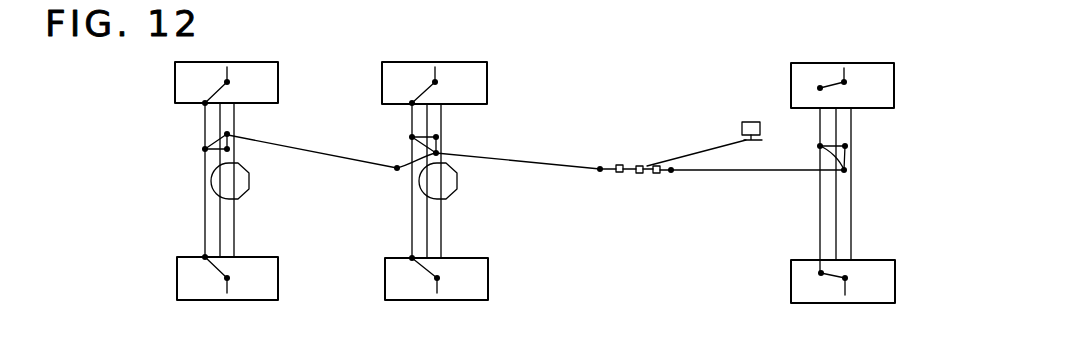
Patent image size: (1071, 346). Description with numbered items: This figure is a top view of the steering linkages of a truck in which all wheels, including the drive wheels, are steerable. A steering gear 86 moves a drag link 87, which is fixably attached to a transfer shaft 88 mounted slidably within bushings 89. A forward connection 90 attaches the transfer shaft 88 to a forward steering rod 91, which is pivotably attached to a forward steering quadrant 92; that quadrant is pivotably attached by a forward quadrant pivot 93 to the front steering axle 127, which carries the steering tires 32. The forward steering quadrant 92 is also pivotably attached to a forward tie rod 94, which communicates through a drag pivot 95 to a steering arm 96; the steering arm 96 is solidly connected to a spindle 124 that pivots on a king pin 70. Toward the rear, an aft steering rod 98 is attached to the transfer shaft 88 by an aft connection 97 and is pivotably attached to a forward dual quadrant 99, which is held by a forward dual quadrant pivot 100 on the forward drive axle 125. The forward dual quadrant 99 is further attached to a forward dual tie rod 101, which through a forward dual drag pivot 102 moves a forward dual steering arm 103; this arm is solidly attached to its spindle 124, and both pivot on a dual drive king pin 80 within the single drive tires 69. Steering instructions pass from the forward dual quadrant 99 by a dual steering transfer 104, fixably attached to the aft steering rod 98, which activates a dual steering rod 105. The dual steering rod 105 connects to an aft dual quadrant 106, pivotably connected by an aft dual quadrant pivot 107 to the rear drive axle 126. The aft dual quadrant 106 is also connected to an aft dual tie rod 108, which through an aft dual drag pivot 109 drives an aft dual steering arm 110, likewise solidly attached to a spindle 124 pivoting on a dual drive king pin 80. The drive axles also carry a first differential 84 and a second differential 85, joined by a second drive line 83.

The spindle 124 is at (227, 67).
The dual drive king pin 80 is at (227, 82).
The single drive tires 69 is at (278, 77).
The aft dual quadrant 106 is at (236, 140).
The dual steering rod 105 is at (325, 154).
The aft dual quadrant pivot 107 is at (227, 149).
The aft dual tie rod 108 is at (205, 170).
The second differential 85 is at (242, 193).
The rear drive axle 126 is at (236, 224).
The aft dual drag pivot 109 is at (205, 257).
The aft dual steering arm 110 is at (217, 274).
The forward dual quadrant pivot 100 is at (438, 137).
The forward dual quadrant 99 is at (446, 147).
The dual steering transfer 104 is at (413, 163).
The aft steering rod 98 is at (537, 163).
The forward dual tie rod 101 is at (412, 199).
The first differential 84 is at (450, 193).
The forward drive axle 125 is at (443, 224).
The forward dual drag pivot 102 is at (412, 258).
The forward dual steering arm 103 is at (422, 275).
The aft connection 97 is at (600, 168).
The bushings 89 is at (619, 165).
The second drive line 83 is at (630, 172).
The transfer shaft 88 is at (647, 173).
The forward connection 90 is at (671, 170).
The drag link 87 is at (708, 149).
The steering gear 86 is at (752, 122).
The forward steering rod 91 is at (733, 170).
The steering tires 32 is at (791, 68).
The forward quadrant pivot 93 is at (845, 146).
The forward steering quadrant 92 is at (850, 158).
The forward tie rod 94 is at (820, 203).
The front steering axle 127 is at (851, 204).
The king pin 70 is at (845, 278).
The steering arm 96 is at (845, 278).
The drag pivot 95 is at (821, 273).